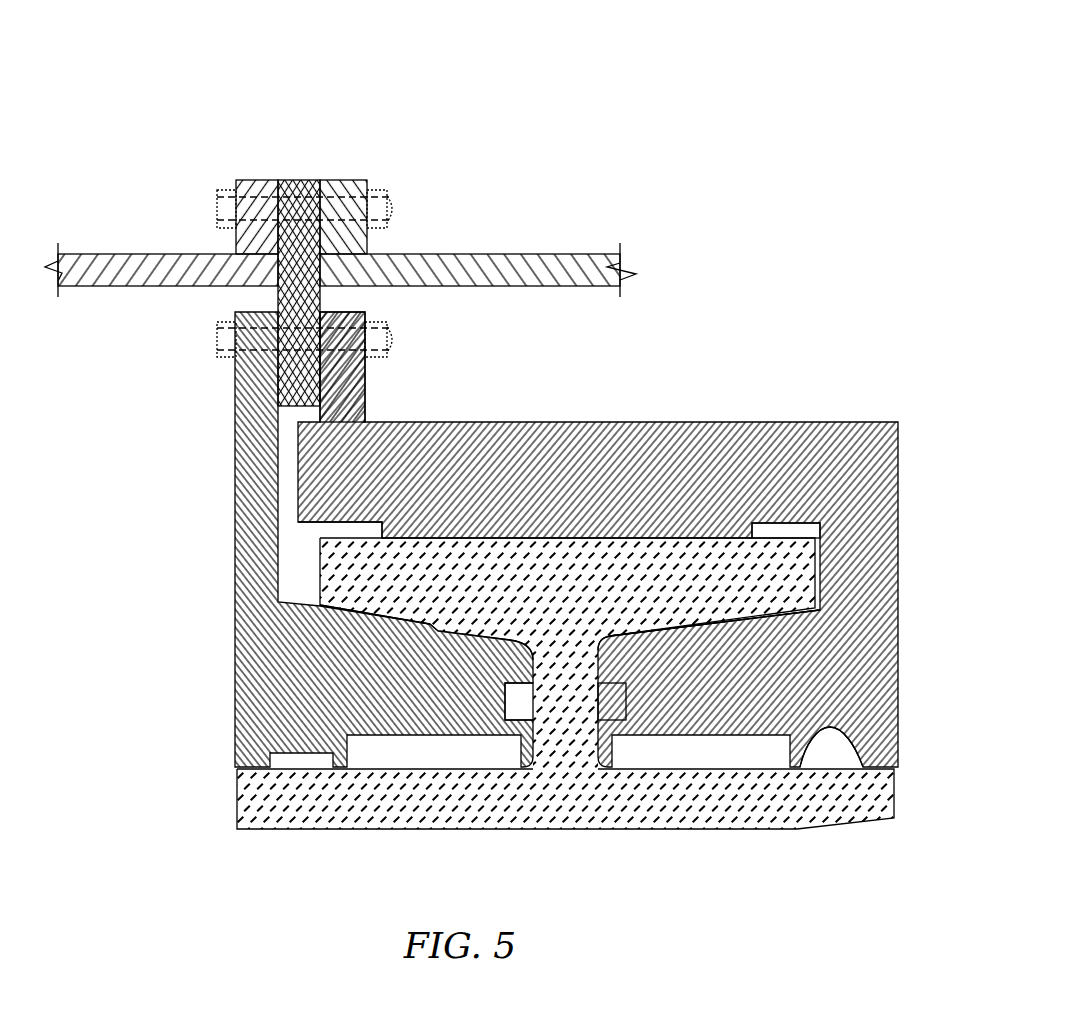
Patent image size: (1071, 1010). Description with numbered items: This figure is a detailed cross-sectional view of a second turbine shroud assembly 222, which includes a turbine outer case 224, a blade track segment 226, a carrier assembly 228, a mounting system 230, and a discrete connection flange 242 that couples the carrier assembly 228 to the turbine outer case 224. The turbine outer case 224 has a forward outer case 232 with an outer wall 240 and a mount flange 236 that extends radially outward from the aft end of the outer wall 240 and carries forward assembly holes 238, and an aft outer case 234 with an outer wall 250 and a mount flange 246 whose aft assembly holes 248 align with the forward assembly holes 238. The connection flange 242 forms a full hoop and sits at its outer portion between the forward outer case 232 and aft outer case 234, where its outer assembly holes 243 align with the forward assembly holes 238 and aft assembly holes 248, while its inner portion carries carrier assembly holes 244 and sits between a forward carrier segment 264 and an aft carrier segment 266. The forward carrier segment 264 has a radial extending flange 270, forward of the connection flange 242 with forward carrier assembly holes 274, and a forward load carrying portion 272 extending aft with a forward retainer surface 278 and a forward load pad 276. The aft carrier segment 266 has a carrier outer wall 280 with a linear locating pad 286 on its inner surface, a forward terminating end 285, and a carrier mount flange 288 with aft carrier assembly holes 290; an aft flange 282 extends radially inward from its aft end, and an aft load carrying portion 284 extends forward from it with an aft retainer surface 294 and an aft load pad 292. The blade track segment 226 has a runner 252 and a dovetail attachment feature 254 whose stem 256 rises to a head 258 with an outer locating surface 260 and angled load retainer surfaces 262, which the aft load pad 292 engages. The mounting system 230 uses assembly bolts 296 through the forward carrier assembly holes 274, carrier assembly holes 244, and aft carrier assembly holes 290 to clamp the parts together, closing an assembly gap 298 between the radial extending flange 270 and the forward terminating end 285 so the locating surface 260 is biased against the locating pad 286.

The turbine shroud assembly 222 is at (800, 98).
The turbine outer case 224 is at (192, 148).
The blade track segment 226 is at (800, 835).
The carrier assembly 228 is at (700, 328).
The mounting system 230 is at (113, 100).
The forward outer case 232 is at (155, 173).
The aft outer case 234 is at (465, 192).
The mount flange 236 is at (250, 186).
The forward assembly holes 238 is at (256, 228).
The outer wall 240 is at (105, 270).
The connection flange 242 is at (317, 178).
The outer assembly holes 243 is at (283, 178).
The carrier assembly holes 244 is at (292, 323).
The mount flange 246 is at (372, 238).
The aft assembly holes 248 is at (350, 188).
The outer wall 250 is at (528, 262).
The runner 252 is at (305, 830).
The dovetail attachment feature 254 is at (557, 690).
The stem 256 is at (533, 703).
The head 258 is at (705, 590).
The locating surface 260 is at (787, 540).
The load retainer surfaces 262 is at (335, 612).
The forward carrier segment 264 is at (200, 520).
The aft carrier segment 266 is at (865, 415).
The radial extending flange 270 is at (262, 458).
The forward load carrying portion 272 is at (407, 623).
The forward carrier assembly holes 274 is at (246, 366).
The forward load pad 276 is at (355, 710).
The forward retainer surface 278 is at (370, 617).
The carrier outer wall 280 is at (485, 432).
The aft flange 282 is at (878, 548).
The aft load carrying portion 284 is at (832, 710).
The forward terminating end 285 is at (297, 458).
The locating pad 286 is at (568, 548).
The carrier mount flange 288 is at (350, 362).
The aft carrier assembly holes 290 is at (337, 323).
The aft load pad 292 is at (707, 628).
The aft retainer surface 294 is at (763, 615).
The assembly bolts 296 is at (225, 342).
The assembly gap 298 is at (287, 495).